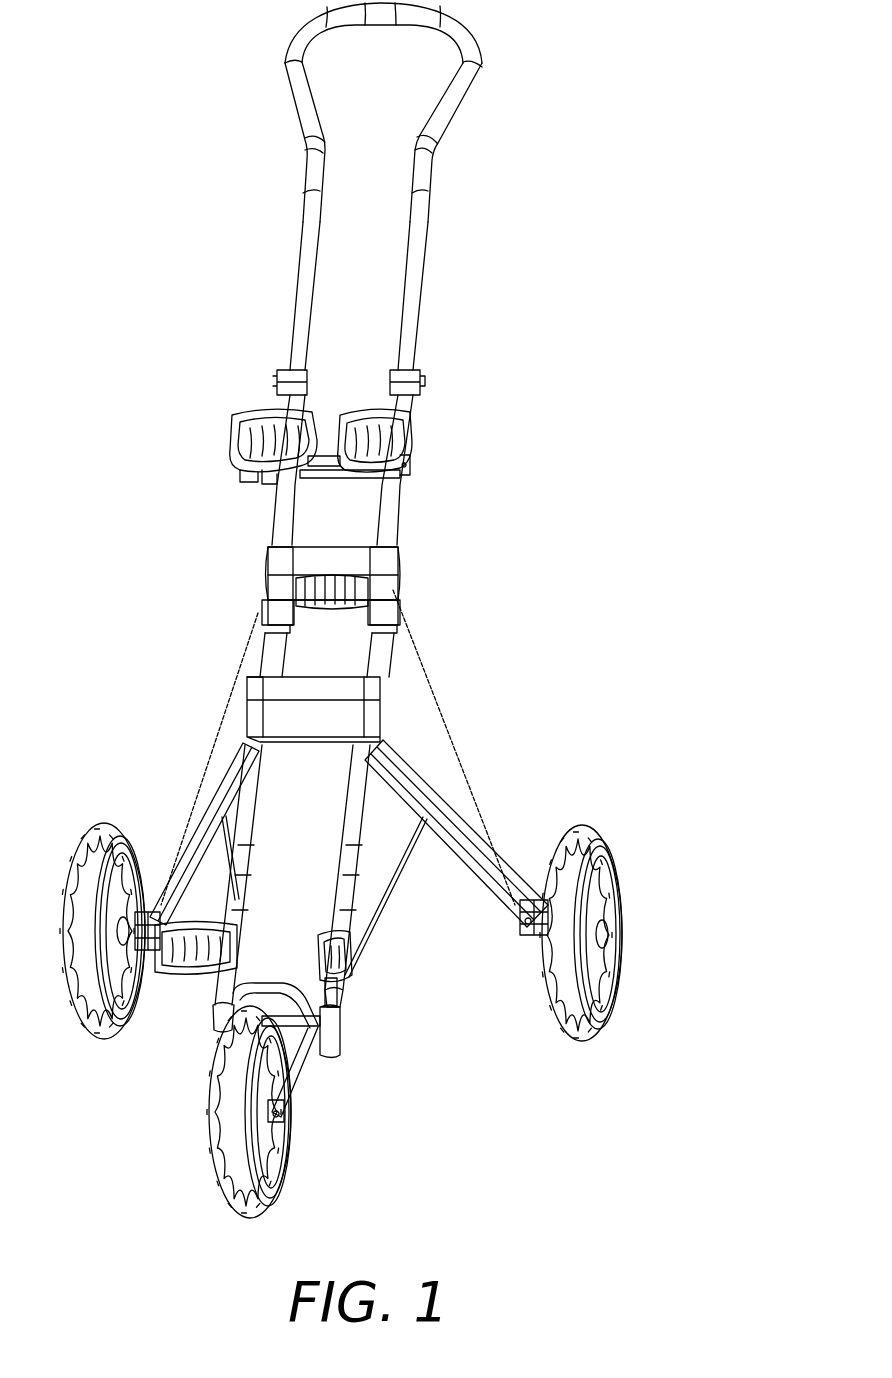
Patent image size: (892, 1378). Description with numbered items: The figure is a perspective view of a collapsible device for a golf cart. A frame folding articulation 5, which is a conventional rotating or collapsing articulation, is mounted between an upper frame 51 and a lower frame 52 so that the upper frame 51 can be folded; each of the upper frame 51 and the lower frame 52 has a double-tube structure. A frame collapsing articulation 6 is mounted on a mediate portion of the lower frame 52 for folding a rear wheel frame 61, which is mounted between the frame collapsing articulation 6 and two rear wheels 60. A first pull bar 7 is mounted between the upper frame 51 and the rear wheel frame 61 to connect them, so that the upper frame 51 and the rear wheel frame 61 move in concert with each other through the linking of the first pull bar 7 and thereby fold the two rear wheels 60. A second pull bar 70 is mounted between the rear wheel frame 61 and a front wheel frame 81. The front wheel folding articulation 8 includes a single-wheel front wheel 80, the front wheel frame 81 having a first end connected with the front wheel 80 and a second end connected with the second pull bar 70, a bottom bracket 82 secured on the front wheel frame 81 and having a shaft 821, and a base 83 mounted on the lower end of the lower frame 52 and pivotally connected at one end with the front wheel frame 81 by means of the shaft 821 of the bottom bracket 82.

The frame folding articulation 5 is at (380, 588).
The frame collapsing articulation 6 is at (343, 707).
The first pull bar 7 is at (448, 735).
The front wheel folding articulation 8 is at (340, 1062).
The upper frame 51 is at (410, 298).
The lower frame 52 is at (370, 652).
The rear wheel 60 is at (570, 835).
The rear wheel frame 61 is at (437, 803).
The second pull bar 70 is at (385, 913).
The front wheel 80 is at (278, 1158).
The front wheel frame 81 is at (290, 1085).
The bottom bracket 82 is at (277, 988).
The base 83 is at (345, 1030).
The shaft 821 is at (287, 1023).